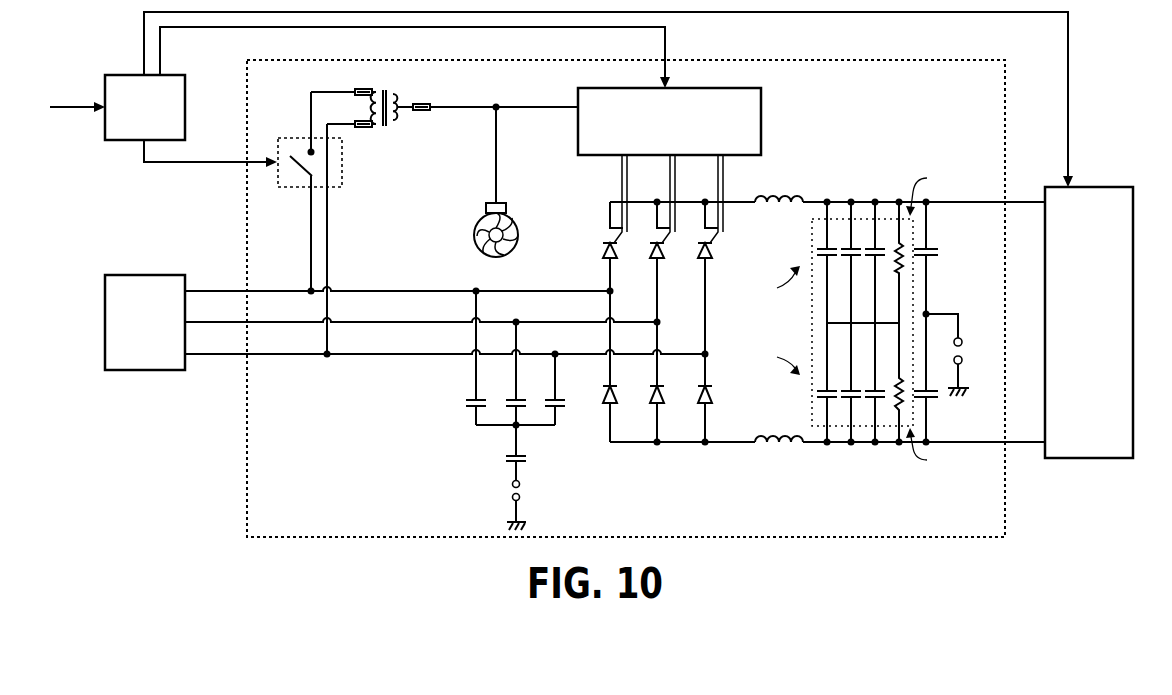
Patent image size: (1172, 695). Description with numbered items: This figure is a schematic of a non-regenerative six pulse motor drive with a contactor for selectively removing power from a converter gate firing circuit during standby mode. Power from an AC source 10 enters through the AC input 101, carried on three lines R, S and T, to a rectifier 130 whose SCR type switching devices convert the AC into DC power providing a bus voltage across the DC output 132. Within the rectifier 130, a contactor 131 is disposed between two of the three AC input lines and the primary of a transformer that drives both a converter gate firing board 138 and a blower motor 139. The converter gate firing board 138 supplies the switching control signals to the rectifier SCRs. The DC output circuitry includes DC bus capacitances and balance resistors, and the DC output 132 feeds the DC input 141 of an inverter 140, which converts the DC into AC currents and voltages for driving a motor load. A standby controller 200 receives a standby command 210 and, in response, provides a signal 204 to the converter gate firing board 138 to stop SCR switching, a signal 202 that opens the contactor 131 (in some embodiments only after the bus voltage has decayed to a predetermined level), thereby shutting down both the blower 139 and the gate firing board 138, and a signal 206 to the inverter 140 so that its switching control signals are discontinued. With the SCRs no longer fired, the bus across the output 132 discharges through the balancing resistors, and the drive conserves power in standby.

The AC source 10 is at (135, 275).
The AC input 101 is at (228, 268).
The rectifier 130 is at (247, 76).
The contactor 131 is at (300, 138).
The DC output 132 is at (998, 186).
The converter gate firing board 138 is at (578, 94).
The blower motor 139 is at (477, 224).
The inverter 140 is at (1088, 187).
The DC input 141 is at (1028, 458).
The standby controller 200 is at (105, 88).
The signal 202 is at (230, 165).
The signal 204 is at (665, 44).
The signal 206 is at (1068, 120).
The standby command 210 is at (50, 107).